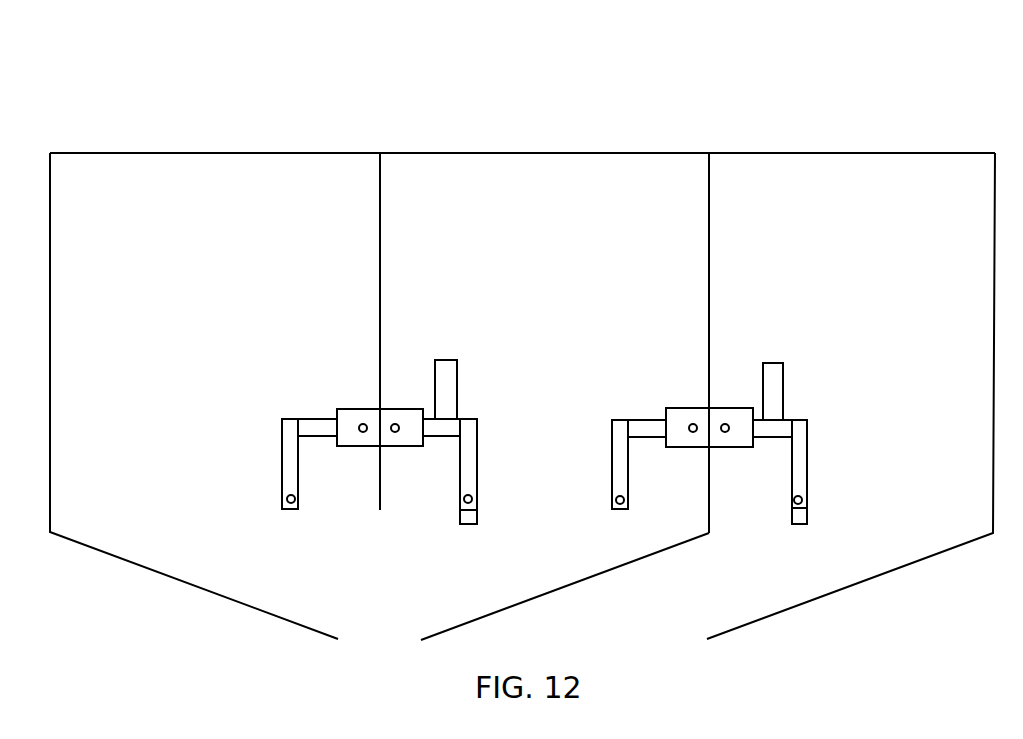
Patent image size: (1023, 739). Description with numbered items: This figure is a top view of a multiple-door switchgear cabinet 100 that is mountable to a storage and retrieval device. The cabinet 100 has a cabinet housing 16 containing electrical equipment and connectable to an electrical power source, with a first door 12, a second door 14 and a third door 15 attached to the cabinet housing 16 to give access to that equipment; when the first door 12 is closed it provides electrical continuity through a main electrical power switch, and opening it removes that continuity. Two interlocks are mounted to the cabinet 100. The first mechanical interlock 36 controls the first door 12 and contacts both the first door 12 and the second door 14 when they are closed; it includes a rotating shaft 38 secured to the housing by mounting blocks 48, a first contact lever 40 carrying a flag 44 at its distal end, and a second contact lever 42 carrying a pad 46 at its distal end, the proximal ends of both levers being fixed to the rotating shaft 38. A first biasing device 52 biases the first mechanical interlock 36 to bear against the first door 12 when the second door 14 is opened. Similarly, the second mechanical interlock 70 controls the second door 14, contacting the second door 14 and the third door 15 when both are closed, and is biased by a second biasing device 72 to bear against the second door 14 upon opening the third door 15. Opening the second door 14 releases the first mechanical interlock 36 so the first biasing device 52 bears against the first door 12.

The multiple-door switchgear cabinet 100 is at (252, 92).
The cabinet housing 16 is at (851, 153).
The third door 15 is at (173, 580).
The second door 14 is at (588, 580).
The first door 12 is at (862, 584).
The second mechanical interlock 70 is at (332, 373).
The second biasing device 72 is at (440, 382).
The first mechanical interlock 36 is at (662, 374).
The rotating shaft 38 is at (652, 425).
The mounting block 48 is at (735, 420).
The second contact lever 42 is at (622, 462).
The pad 46 is at (617, 499).
The first contact lever 40 is at (800, 462).
The flag 44 is at (800, 517).
The first biasing device 52 is at (777, 377).